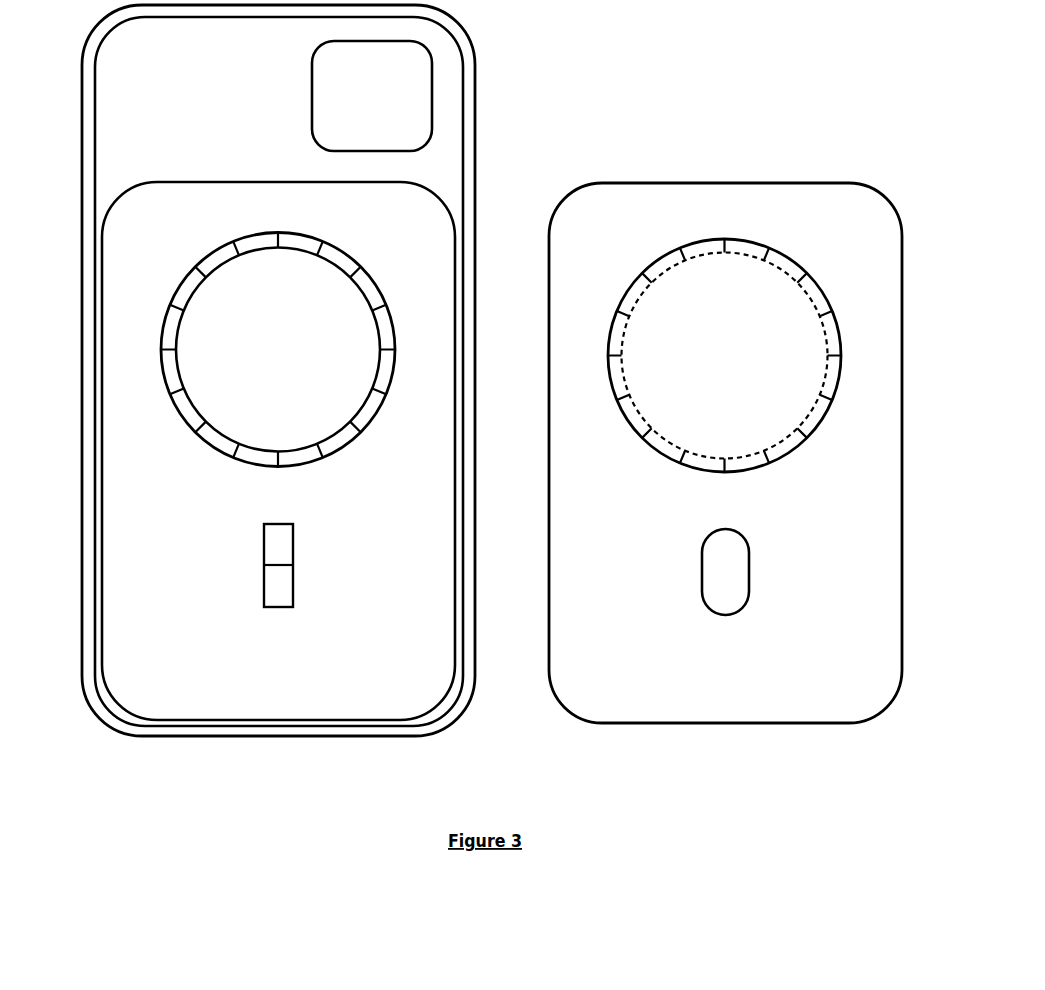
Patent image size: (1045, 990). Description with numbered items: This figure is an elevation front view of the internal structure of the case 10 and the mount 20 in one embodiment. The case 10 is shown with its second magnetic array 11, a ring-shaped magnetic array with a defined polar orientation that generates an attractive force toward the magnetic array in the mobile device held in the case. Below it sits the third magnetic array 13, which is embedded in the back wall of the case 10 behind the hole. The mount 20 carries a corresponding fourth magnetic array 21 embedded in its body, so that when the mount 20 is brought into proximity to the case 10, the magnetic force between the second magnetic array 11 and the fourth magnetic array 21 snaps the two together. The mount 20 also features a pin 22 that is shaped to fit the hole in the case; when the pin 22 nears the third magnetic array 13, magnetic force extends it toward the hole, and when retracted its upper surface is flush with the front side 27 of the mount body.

The case 10 is at (466, 118).
The second magnetic array 11 is at (187, 293).
The third magnetic array 13 is at (269, 551).
The mount 20 is at (725, 184).
The fourth magnetic array 21 is at (812, 293).
The pin 22 is at (724, 550).
The front side 27 is at (620, 525).